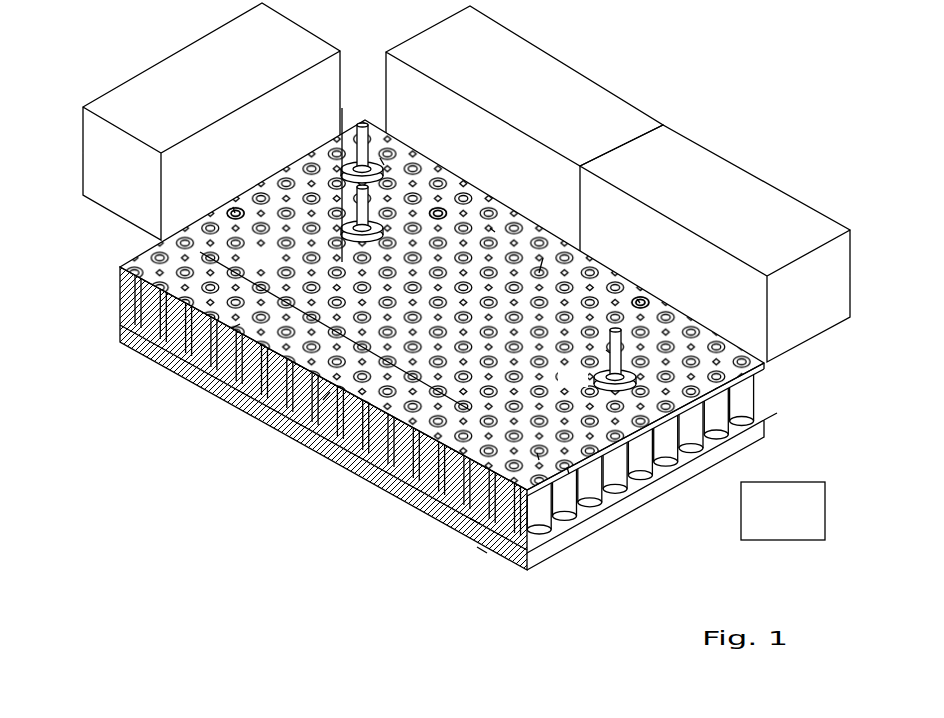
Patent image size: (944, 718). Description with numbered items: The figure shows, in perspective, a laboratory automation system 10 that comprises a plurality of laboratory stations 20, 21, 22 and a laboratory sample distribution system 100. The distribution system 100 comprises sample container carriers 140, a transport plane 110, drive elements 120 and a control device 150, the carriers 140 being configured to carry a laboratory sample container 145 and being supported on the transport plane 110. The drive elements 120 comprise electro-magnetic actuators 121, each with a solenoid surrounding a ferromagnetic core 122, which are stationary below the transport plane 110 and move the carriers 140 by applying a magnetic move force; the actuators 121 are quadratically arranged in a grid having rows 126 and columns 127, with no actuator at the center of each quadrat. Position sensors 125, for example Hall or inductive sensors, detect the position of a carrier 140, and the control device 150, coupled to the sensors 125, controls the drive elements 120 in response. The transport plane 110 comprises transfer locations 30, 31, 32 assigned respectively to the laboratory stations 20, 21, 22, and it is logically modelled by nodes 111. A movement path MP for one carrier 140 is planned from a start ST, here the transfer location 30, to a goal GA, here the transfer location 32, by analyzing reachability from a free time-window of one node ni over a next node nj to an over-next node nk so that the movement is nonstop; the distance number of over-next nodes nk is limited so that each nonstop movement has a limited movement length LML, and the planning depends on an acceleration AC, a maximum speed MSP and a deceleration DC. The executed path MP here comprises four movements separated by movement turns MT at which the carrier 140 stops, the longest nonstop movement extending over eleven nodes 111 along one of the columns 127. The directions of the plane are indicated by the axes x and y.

The laboratory automation system 10 is at (294, 531).
The laboratory station 20 is at (180, 76).
The laboratory station 21 is at (572, 101).
The laboratory station 22 is at (748, 188).
The transfer location 30 is at (227, 211).
The transfer location 31 is at (442, 203).
The transfer location 32 is at (648, 300).
The laboratory sample distribution system 100 is at (243, 497).
The transport plane 110 is at (177, 262).
The nodes 111 is at (232, 328).
The drive elements 120 is at (507, 563).
The electro-magnetic actuators 121 is at (470, 520).
The ferromagnetic core 122 is at (477, 548).
The position sensors 125 is at (490, 228).
The rows 126 is at (640, 440).
The columns 127 is at (567, 468).
The sample container carriers 140 is at (323, 400).
The laboratory sample container 145 is at (762, 376).
The control device 150 is at (768, 521).
The start ST is at (234, 208).
The movement turns MT is at (311, 222).
The node ni is at (312, 205).
The next node nj is at (382, 160).
The over-next node nk is at (606, 350).
The acceleration AC is at (314, 231).
The movement path MP is at (461, 318).
The deceleration DC is at (519, 345).
The goal GA is at (637, 299).
The limited movement length LML is at (233, 328).
The maximum speed MSP is at (323, 400).
The x axis x is at (800, 155).
The y axis y is at (797, 152).